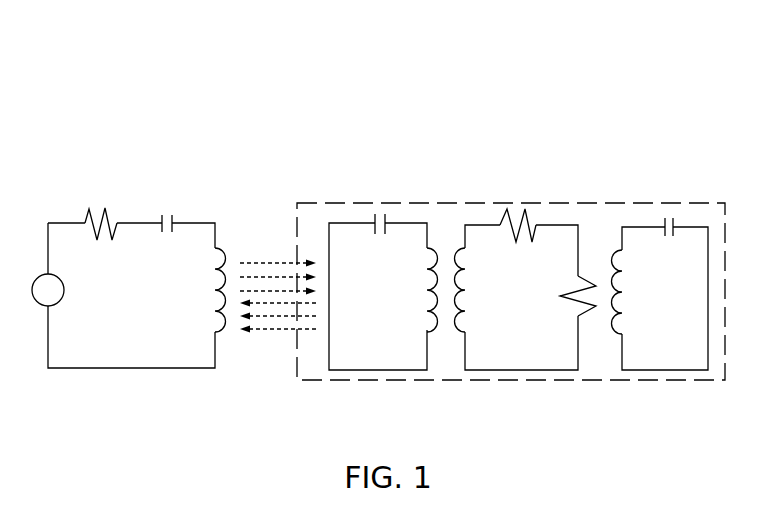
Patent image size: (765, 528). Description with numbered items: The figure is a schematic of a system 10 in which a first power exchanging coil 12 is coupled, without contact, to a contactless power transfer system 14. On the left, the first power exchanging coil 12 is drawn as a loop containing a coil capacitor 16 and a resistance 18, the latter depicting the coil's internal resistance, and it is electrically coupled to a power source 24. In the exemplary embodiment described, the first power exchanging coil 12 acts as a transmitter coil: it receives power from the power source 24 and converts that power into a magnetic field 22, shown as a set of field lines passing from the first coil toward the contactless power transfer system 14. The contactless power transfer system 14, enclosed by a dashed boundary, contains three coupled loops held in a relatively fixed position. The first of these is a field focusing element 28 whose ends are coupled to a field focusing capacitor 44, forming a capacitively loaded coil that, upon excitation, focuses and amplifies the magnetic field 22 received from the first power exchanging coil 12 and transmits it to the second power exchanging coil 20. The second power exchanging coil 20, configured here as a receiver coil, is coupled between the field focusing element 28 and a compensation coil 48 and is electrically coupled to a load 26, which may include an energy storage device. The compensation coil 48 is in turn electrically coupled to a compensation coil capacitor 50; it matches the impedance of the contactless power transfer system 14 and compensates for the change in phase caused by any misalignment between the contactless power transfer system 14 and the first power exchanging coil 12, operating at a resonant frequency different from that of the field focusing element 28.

The system 10 is at (612, 55).
The first power exchanging coil 12 is at (62, 221).
The contactless power transfer system 14 is at (484, 202).
The coil capacitor 16 is at (174, 217).
The resistance 18 is at (106, 211).
The second power exchanging coil 20 is at (560, 223).
The magnetic field 22 is at (250, 257).
The power source 24 is at (66, 290).
The load 26 is at (566, 289).
The field focusing element 28 is at (406, 222).
The field focusing capacitor 44 is at (373, 221).
The compensation coil 48 is at (693, 223).
The compensation coil capacitor 50 is at (663, 219).